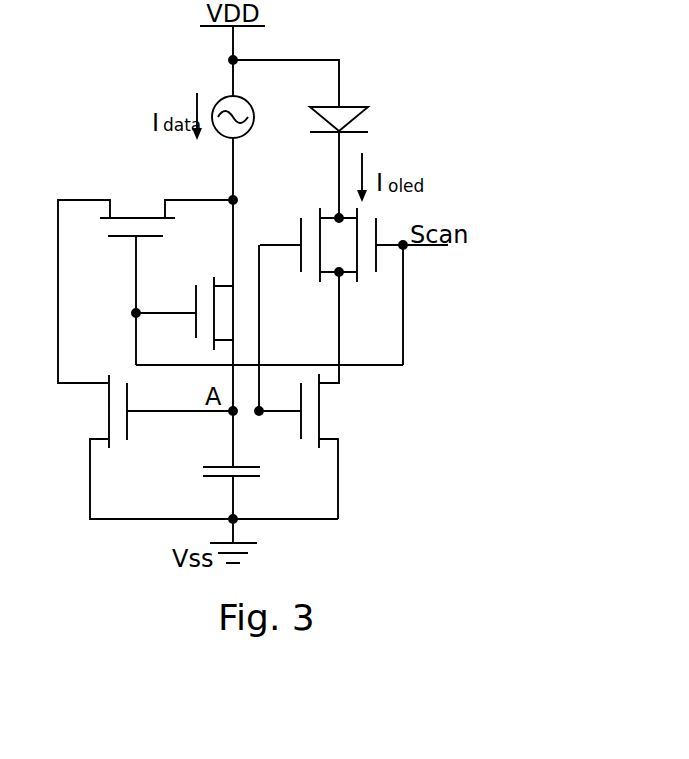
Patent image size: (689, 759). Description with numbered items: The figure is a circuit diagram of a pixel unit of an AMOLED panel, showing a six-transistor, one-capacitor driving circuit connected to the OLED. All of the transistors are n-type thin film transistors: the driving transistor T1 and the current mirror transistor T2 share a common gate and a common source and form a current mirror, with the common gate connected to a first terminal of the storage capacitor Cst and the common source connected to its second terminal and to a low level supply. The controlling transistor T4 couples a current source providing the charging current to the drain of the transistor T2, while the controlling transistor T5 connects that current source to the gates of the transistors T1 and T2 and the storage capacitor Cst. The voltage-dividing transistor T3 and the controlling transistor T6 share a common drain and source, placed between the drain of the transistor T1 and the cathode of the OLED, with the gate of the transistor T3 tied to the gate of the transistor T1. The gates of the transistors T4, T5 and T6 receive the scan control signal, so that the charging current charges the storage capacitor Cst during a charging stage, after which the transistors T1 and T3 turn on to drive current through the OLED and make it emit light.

The driving Thin Film Transistor T1 is at (323, 446).
The current mirror Thin Film Transistor T2 is at (197, 447).
The voltage-dividing Thin Film Transistor T3 is at (301, 262).
The controlling Transistor T4 is at (145, 280).
The controlling Transistor T5 is at (184, 319).
The controlling Transistor T6 is at (393, 286).
The storage capacitor Cst is at (216, 481).
The organic light emitting diode OLED is at (376, 148).